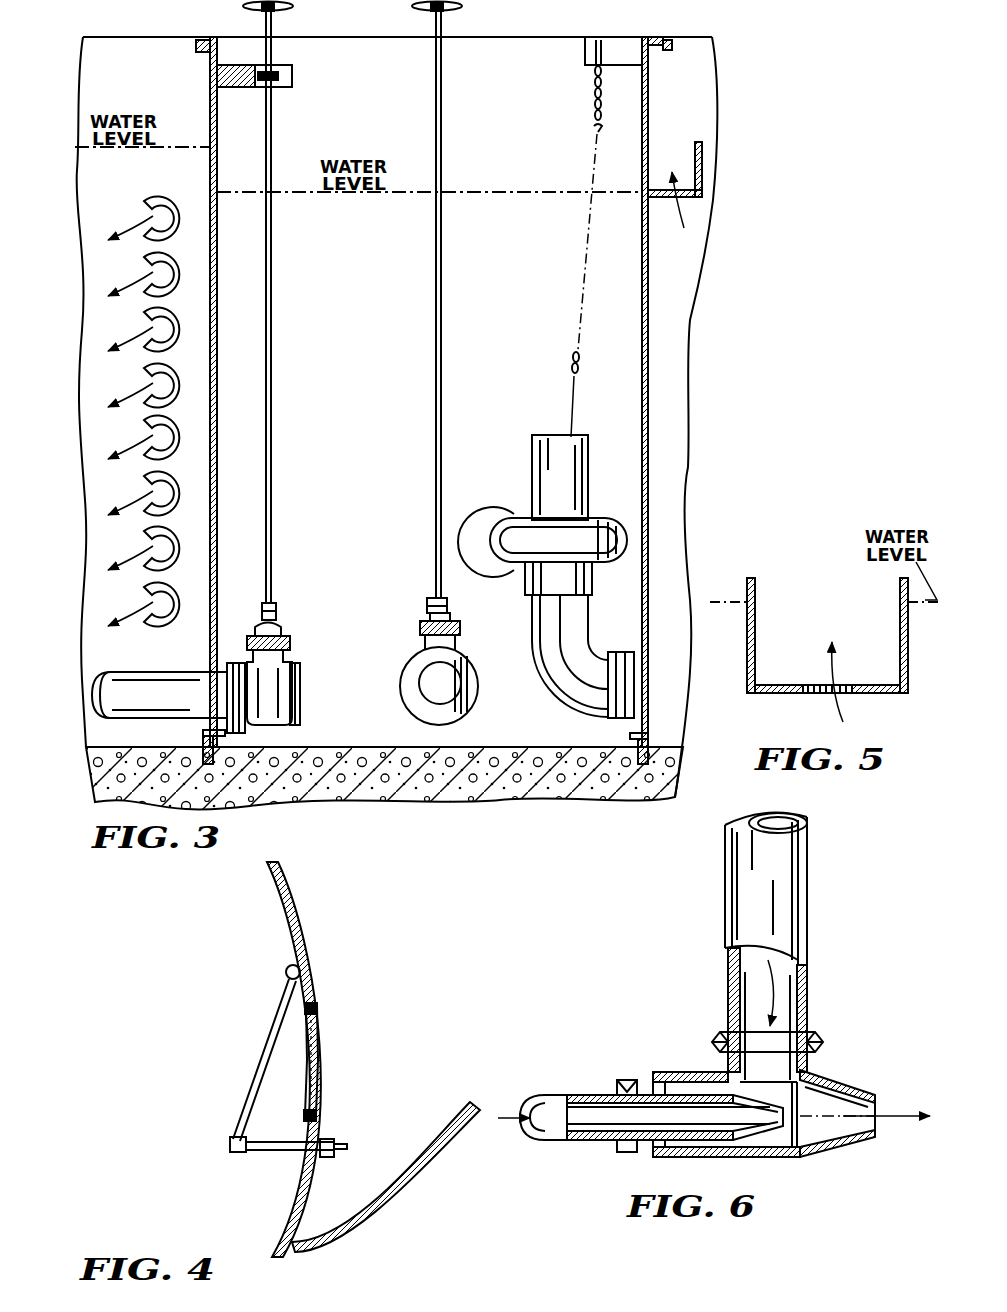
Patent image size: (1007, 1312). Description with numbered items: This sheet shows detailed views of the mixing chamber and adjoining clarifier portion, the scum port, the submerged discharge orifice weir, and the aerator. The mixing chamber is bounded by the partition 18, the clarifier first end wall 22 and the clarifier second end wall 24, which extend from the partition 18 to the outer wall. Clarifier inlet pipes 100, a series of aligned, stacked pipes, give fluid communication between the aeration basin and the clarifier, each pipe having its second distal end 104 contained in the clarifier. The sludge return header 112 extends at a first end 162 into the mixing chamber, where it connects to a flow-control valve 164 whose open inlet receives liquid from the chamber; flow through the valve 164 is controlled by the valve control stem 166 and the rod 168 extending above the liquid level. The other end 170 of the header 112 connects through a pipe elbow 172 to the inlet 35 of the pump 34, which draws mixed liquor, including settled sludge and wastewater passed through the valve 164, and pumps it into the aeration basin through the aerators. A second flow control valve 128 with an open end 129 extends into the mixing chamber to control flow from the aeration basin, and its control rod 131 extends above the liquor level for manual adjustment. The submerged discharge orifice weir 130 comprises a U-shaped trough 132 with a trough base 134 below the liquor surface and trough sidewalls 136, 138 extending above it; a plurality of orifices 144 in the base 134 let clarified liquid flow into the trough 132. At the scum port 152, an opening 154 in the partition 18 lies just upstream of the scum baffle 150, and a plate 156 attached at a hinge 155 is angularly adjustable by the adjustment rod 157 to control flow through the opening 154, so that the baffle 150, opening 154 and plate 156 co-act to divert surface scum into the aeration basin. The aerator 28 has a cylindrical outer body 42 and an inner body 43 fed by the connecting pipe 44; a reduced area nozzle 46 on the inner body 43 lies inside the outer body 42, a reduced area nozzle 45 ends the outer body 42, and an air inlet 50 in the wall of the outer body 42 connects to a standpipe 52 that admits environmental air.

In FIG. 4, the partition 18 is at (304, 948).
In FIG. 3, the clarifier first end wall 22 is at (210, 102).
In FIG. 3, the clarifier second end wall 24 is at (648, 106).
In FIG. 6, the aerator 28 is at (836, 1150).
In FIG. 3, the pump 34 is at (610, 522).
In FIG. 3, the inlet 35 is at (527, 585).
In FIG. 6, the aerator outer body 42 is at (758, 1158).
In FIG. 6, the inner body 43 is at (645, 1150).
In FIG. 6, the connecting pipe 44 is at (600, 1093).
In FIG. 6, the reduced area nozzle 45 is at (876, 1093).
In FIG. 6, the reduced area nozzle 46 is at (788, 1112).
In FIG. 6, the air inlet 50 is at (822, 1064).
In FIG. 6, the standpipe 52 is at (807, 903).
In FIG. 3, the clarifier inlet pipes 100 is at (160, 203).
In FIG. 3, the second distal end 104 is at (140, 208).
In FIG. 3, the sludge return header 112 is at (142, 668).
In FIG. 3, the second flow control valve 128 is at (416, 654).
In FIG. 3, the open end 129 is at (432, 686).
In FIG. 5, the submerged discharge orifice weir 130 is at (908, 645).
In FIG. 3, the control rod 131 is at (435, 352).
In FIG. 5, the trough 132 is at (756, 645).
In FIG. 5, the trough base 134 is at (792, 674).
In FIG. 5, the trough sidewall 136 is at (756, 596).
In FIG. 5, the trough sidewall 138 is at (900, 590).
In FIG. 5, the orifices 144 is at (838, 686).
In FIG. 4, the scum baffle 150 is at (414, 1176).
In FIG. 4, the scum port 152 is at (316, 996).
In FIG. 4, the opening 154 is at (324, 1068).
In FIG. 4, the hinge 155 is at (286, 970).
In FIG. 4, the plate 156 is at (256, 1082).
In FIG. 4, the adjustment rod 157 is at (272, 1155).
In FIG. 3, the first end 162 is at (226, 664).
In FIG. 3, the flow-control valve 164 is at (293, 665).
In FIG. 3, the valve control stem 166 is at (277, 611).
In FIG. 3, the rod 168 is at (272, 352).
In FIG. 3, the end 170 is at (631, 654).
In FIG. 3, the pipe elbow 172 is at (548, 682).